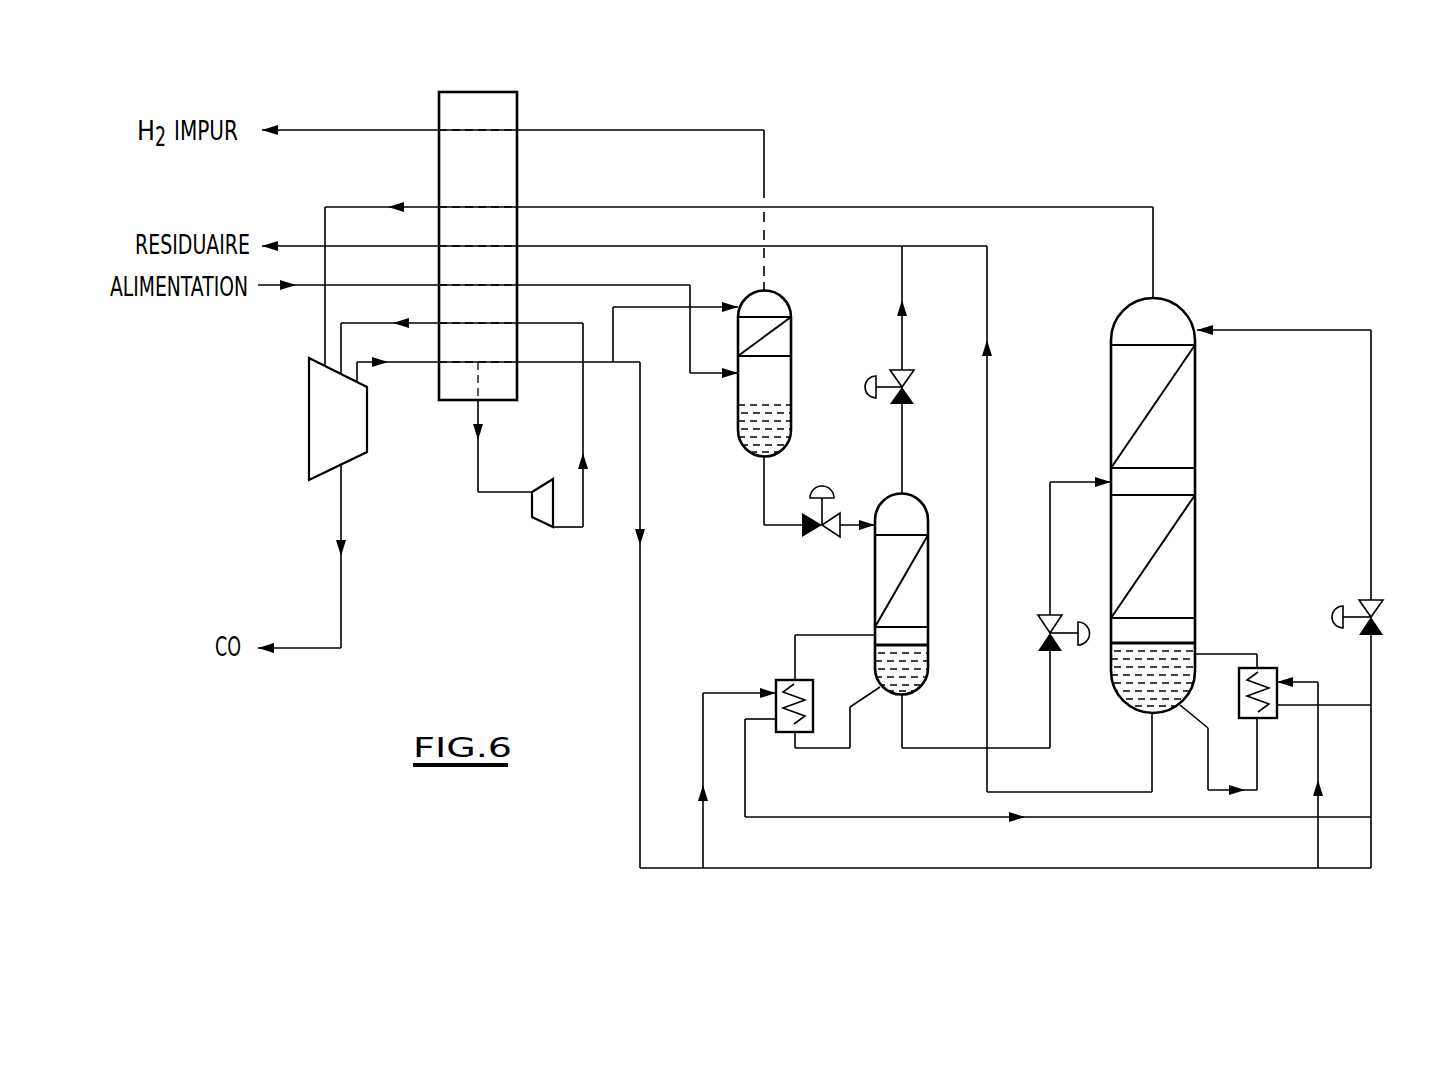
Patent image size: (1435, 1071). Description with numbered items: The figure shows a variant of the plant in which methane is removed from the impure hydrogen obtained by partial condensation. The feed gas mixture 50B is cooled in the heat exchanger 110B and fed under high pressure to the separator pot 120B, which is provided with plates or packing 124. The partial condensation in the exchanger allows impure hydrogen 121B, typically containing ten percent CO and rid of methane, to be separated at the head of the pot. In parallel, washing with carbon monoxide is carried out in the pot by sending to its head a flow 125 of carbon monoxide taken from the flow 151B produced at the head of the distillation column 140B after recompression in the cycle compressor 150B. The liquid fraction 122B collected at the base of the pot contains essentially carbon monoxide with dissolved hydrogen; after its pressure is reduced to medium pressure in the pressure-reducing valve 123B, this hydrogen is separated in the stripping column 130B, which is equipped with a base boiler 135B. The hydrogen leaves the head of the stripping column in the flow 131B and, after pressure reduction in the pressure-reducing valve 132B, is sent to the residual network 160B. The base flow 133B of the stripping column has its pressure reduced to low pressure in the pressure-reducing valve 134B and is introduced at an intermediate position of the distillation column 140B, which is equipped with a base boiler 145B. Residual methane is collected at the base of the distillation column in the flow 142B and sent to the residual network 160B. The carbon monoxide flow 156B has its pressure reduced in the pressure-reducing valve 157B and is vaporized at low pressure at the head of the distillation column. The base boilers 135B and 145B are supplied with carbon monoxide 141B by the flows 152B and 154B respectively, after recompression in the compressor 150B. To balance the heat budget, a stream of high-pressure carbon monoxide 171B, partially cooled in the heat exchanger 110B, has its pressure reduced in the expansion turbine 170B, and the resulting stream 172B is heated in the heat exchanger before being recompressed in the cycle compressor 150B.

The heat exchanger 110B is at (472, 92).
The impure hydrogen 121B is at (764, 147).
The residual network 160B is at (300, 245).
The feed gas mixture 50B is at (313, 290).
The carbon monoxide flow 151B is at (368, 363).
The cycle compressor 150B is at (307, 408).
The high-pressure carbon monoxide stream 171B is at (477, 464).
The turbine outlet stream 172B is at (580, 478).
The expansion turbine 170B is at (533, 520).
The carbon monoxide wash flow 125 is at (715, 305).
The plates or packing 124 is at (793, 335).
The separator pot 120B is at (794, 374).
The liquid fraction 122B is at (763, 476).
The pressure-reducing valve 123B is at (820, 528).
The pressure-reducing valve 132B is at (905, 383).
The hydrogen flow 131B is at (930, 427).
The stripping column 130B is at (928, 638).
The base boiler 135B is at (807, 748).
The stripping column base flow 133B is at (920, 748).
The carbon monoxide flow 152B is at (703, 860).
The carbon monoxide 141B is at (1153, 287).
The distillation column 140B is at (1197, 560).
The pressure-reducing valve 157B is at (1360, 602).
The base boiler 145B is at (1213, 655).
The pressure-reducing valve 134B is at (1057, 648).
The methane base flow 142B is at (1043, 790).
The carbon monoxide flow 156B is at (1372, 795).
The carbon monoxide flow 154B is at (1318, 842).